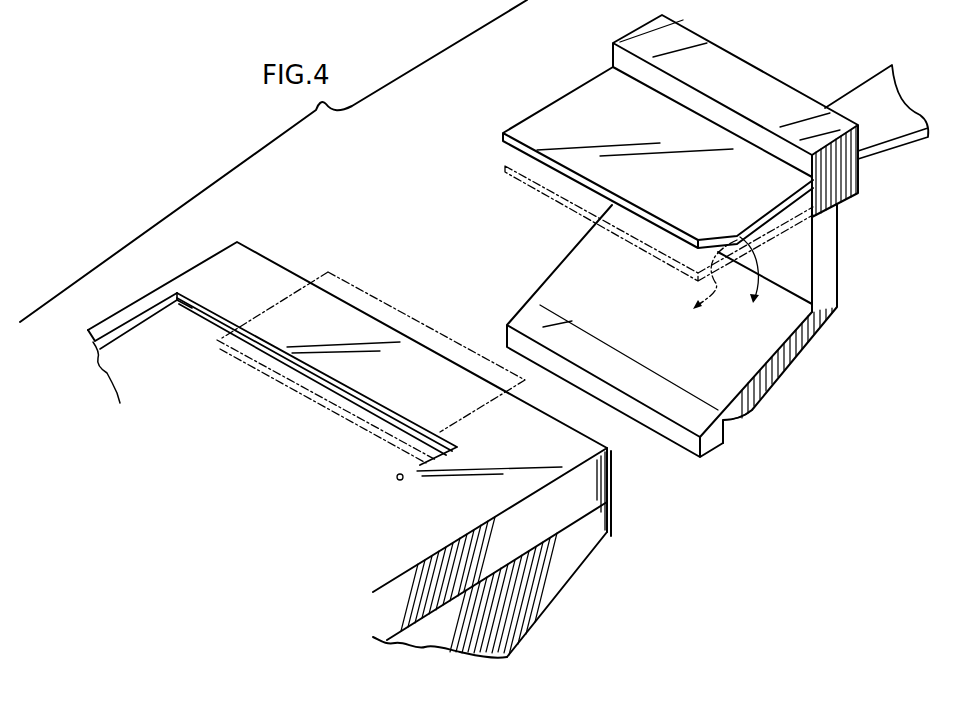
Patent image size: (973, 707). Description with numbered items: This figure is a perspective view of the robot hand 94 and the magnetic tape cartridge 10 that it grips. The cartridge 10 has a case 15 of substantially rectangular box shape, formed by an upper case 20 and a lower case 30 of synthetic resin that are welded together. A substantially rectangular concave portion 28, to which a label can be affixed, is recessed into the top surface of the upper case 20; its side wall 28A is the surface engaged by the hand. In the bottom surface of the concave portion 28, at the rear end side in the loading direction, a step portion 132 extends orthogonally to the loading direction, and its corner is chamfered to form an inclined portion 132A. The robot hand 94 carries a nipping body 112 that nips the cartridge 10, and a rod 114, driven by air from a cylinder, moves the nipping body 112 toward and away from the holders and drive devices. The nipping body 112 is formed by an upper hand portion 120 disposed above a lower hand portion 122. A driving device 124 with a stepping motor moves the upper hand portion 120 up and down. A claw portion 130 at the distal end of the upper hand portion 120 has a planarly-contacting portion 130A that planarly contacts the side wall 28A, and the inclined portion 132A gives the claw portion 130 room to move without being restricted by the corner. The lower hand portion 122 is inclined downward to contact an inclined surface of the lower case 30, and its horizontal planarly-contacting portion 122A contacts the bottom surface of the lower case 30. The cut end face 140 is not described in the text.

The magnetic tape cartridge 10 is at (293, 227).
The case 15 is at (387, 450).
The upper case 20 is at (607, 488).
The lower case 30 is at (567, 578).
The cut end face 140 is at (547, 610).
The step portion 132 is at (175, 292).
The inclined portion 132A is at (190, 318).
The side wall of the concave portion 28A is at (211, 313).
The concave portion 28 is at (401, 481).
The robot hand 94 is at (815, 33).
The driving device 124 is at (767, 87).
The rod 114 is at (900, 142).
The nipping body 112 is at (852, 271).
The upper hand portion 120 is at (777, 330).
The claw portion 130 is at (703, 283).
The planarly-contacting portion of the claw portion 130A is at (752, 282).
The lower hand portion 122 is at (797, 362).
The planarly-contacting portion 122A is at (717, 417).